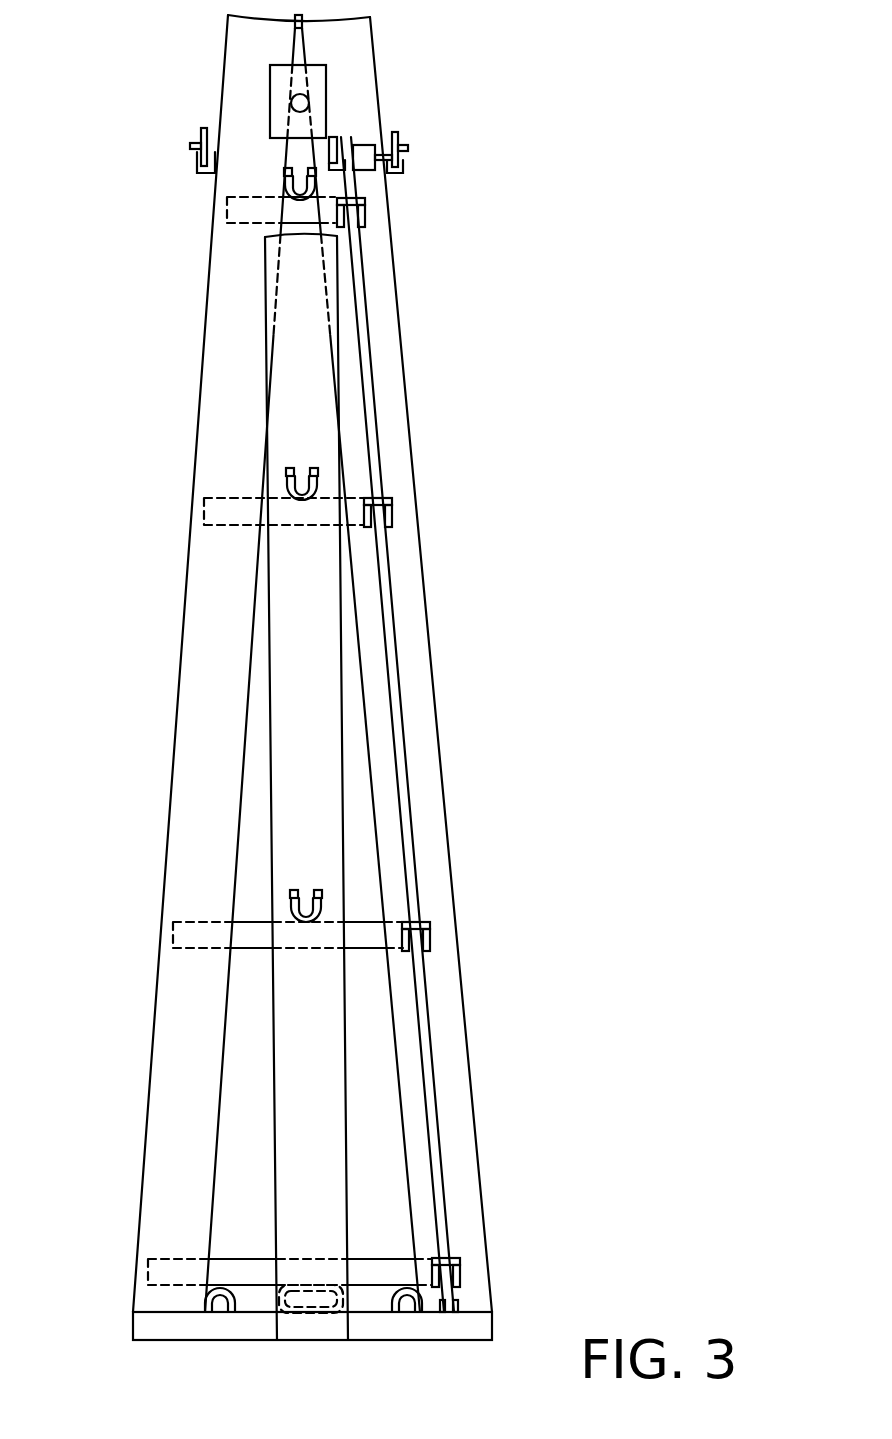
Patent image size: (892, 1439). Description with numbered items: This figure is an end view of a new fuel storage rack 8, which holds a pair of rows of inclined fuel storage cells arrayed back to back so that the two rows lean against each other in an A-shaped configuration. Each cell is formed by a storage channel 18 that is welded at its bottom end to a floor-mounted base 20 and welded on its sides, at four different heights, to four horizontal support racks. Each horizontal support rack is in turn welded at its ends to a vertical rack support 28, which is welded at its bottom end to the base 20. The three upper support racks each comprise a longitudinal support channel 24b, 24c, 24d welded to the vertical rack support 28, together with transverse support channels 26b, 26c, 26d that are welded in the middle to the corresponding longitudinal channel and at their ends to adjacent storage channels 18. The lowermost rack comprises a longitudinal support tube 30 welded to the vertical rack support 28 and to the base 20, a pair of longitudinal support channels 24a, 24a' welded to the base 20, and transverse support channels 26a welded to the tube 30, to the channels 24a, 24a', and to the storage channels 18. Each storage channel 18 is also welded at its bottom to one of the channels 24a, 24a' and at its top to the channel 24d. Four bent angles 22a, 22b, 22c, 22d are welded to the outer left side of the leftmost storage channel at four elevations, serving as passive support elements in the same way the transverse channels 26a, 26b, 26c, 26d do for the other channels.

The new fuel storage rack 8 is at (420, 318).
The storage channel 18 is at (156, 1021).
The floor-mounted base 20 is at (376, 1326).
The bent angle 22a is at (458, 1273).
The bent angle 22b is at (431, 937).
The bent angle 22c is at (391, 512).
The bent angle 22d is at (360, 211).
The longitudinal support channel 24a is at (171, 1334).
The longitudinal support channel 24a' is at (457, 1338).
The longitudinal support channel 24b is at (291, 905).
The longitudinal support channel 24c is at (286, 483).
The longitudinal support channel 24d is at (284, 177).
The transverse support channel 26a is at (170, 1259).
The transverse support channel 26b is at (193, 920).
The transverse support channel 26c is at (224, 526).
The transverse support channel 26d is at (248, 224).
The vertical rack support 28 is at (273, 1088).
The longitudinal support tube 30 is at (311, 1288).